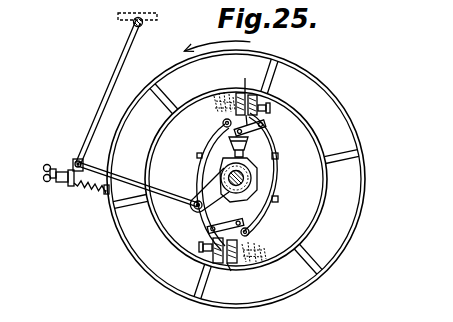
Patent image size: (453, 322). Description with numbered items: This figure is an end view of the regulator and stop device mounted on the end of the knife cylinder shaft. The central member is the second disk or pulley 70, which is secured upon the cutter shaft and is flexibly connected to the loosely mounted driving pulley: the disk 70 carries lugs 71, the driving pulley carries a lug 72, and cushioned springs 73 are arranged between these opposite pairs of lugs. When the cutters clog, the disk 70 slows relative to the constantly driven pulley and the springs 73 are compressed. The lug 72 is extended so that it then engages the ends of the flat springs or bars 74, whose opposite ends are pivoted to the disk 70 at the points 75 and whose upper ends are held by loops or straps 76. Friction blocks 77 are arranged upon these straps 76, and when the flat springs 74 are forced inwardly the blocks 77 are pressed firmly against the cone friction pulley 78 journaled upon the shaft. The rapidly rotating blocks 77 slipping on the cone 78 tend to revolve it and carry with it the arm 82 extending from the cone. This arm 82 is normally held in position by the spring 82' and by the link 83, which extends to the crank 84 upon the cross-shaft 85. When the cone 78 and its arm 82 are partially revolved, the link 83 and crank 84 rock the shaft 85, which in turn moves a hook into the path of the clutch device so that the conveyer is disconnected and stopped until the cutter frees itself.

The second disk or pulley 70 is at (373, 214).
The lugs 71 is at (212, 98).
The lug 72 is at (262, 103).
The cushioned springs 73 is at (240, 278).
The flat springs or bars 74 is at (196, 181).
The pivot points 75 is at (223, 123).
The loops or straps 76 is at (266, 129).
The friction blocks 77 is at (210, 170).
The cone friction pulley 78 is at (262, 188).
The arm 82 is at (192, 215).
The spring 82' is at (77, 190).
The link 83 is at (118, 178).
The crank 84 is at (118, 78).
The cross-shaft 85 is at (150, 18).